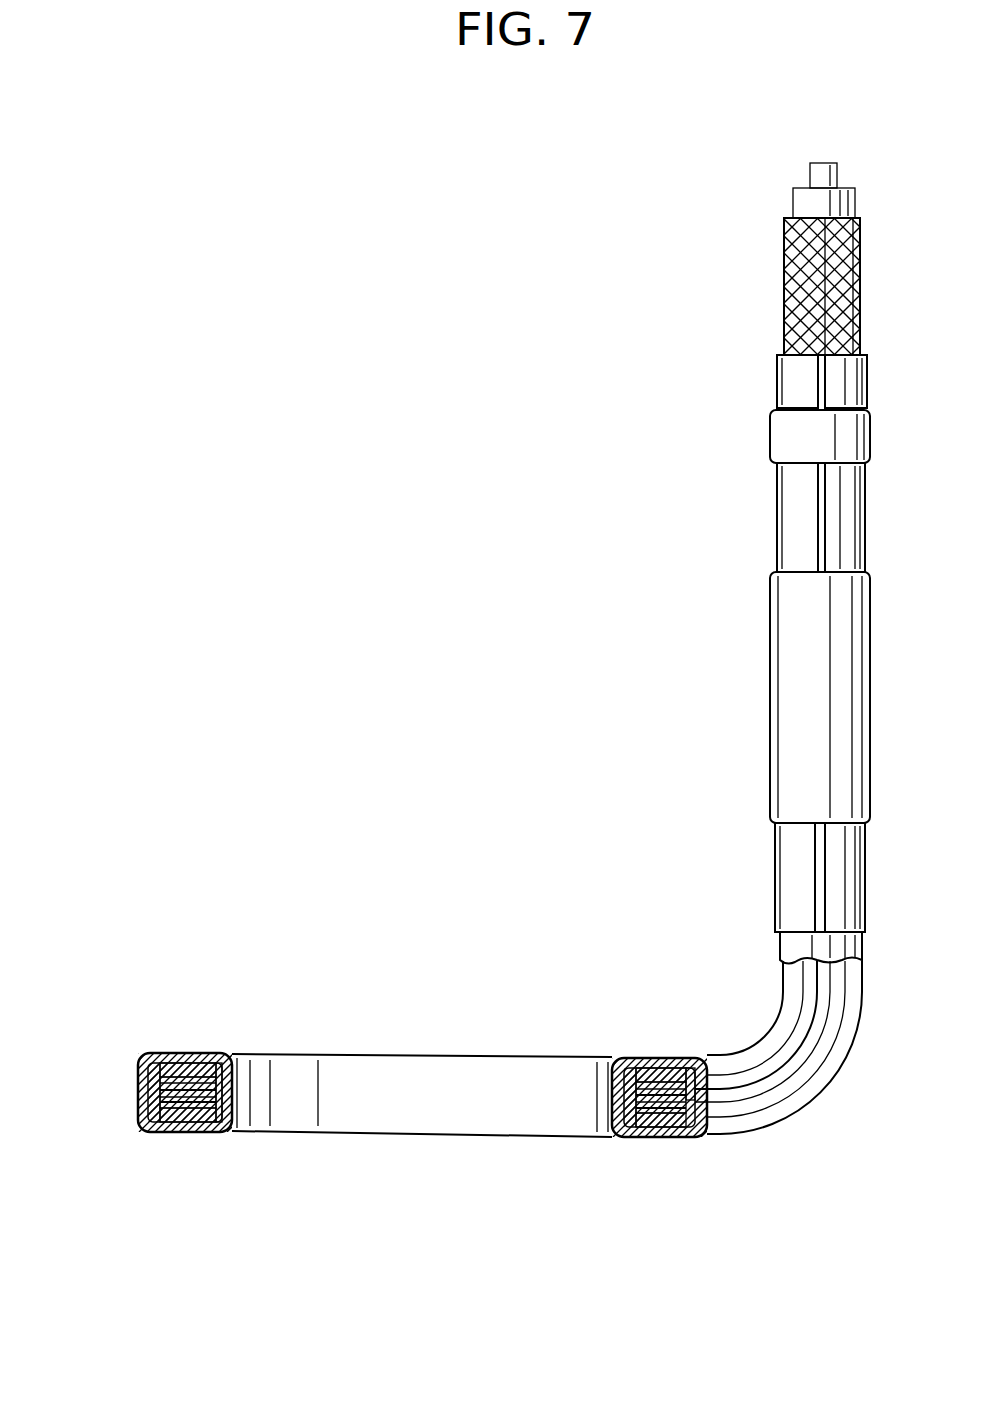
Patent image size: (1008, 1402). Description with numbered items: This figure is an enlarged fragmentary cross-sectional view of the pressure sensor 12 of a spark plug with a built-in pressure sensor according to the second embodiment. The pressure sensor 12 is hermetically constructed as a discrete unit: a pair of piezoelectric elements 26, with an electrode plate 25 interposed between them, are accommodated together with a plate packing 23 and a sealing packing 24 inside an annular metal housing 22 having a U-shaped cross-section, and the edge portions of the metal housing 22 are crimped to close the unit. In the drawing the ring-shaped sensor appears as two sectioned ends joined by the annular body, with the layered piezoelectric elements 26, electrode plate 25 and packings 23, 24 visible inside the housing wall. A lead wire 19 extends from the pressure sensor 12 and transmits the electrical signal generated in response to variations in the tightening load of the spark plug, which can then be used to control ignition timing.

The lead wire 19 is at (785, 287).
The pressure sensor 12 is at (480, 1053).
The metal housing 22 is at (148, 1050).
The plate packing 23 is at (187, 1060).
The sealing packing 24 is at (200, 1128).
The electrode plate 25 is at (230, 1060).
The piezoelectric elements 26 is at (140, 1080).